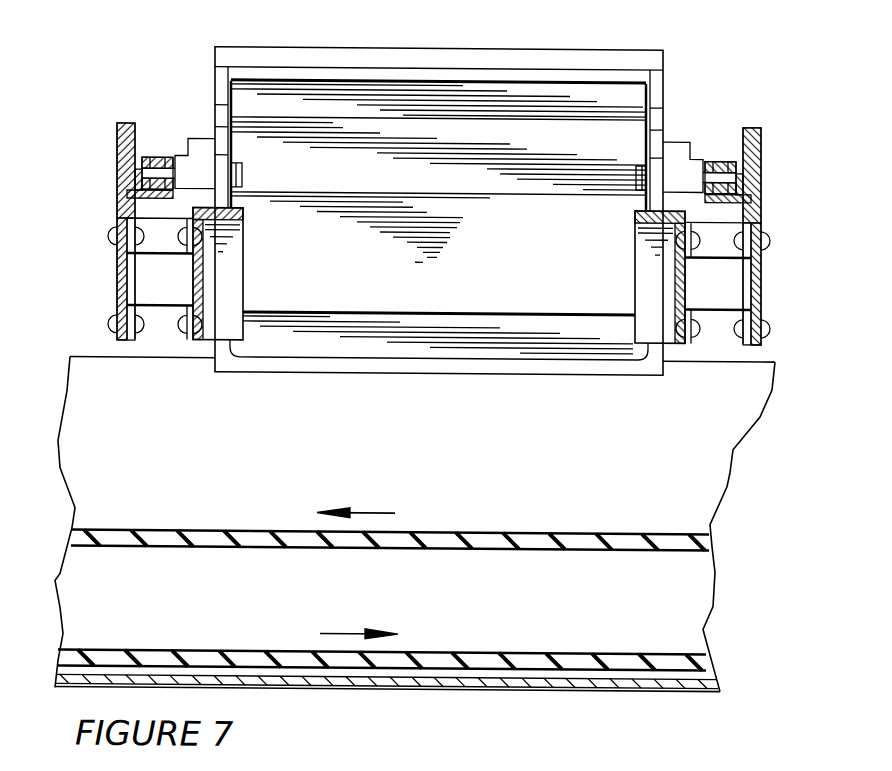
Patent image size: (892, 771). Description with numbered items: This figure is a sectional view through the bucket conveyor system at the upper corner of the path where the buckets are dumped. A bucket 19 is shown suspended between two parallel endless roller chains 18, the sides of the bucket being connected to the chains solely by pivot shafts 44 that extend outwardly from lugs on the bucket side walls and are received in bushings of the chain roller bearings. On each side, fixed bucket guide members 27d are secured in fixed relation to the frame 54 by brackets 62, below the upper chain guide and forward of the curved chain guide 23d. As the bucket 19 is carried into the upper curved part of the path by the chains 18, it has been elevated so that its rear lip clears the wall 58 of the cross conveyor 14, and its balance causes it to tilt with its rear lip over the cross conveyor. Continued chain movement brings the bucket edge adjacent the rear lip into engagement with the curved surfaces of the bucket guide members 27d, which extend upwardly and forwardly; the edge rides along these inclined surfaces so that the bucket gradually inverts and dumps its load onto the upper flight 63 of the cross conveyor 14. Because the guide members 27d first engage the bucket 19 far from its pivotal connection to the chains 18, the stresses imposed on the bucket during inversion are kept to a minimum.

The cross conveyor 14 is at (721, 552).
The endless roller chain 18 is at (157, 155).
The bucket 19 is at (517, 45).
The curved chain guide 23d is at (152, 197).
The fixed bucket guide member 27d is at (222, 268).
The pivot shaft 44 is at (150, 175).
The frame 54 is at (118, 189).
The wall of the cross conveyor 58 is at (715, 447).
The bracket 62 is at (167, 239).
The upper flight of the cross conveyor 63 is at (533, 529).